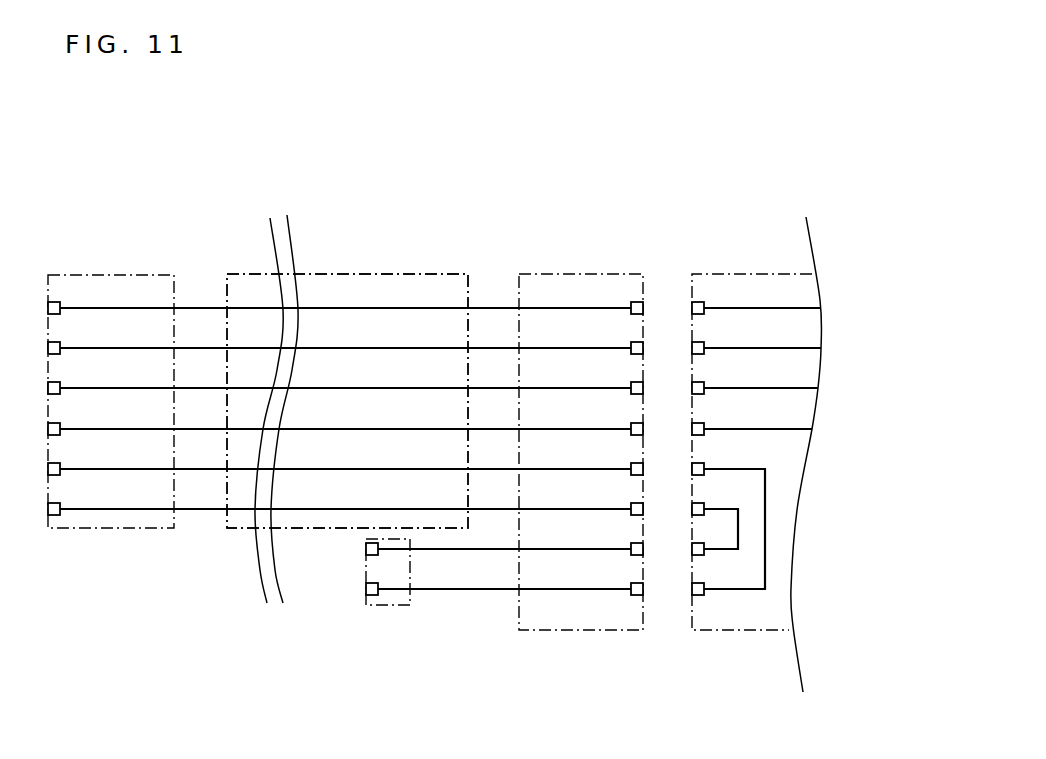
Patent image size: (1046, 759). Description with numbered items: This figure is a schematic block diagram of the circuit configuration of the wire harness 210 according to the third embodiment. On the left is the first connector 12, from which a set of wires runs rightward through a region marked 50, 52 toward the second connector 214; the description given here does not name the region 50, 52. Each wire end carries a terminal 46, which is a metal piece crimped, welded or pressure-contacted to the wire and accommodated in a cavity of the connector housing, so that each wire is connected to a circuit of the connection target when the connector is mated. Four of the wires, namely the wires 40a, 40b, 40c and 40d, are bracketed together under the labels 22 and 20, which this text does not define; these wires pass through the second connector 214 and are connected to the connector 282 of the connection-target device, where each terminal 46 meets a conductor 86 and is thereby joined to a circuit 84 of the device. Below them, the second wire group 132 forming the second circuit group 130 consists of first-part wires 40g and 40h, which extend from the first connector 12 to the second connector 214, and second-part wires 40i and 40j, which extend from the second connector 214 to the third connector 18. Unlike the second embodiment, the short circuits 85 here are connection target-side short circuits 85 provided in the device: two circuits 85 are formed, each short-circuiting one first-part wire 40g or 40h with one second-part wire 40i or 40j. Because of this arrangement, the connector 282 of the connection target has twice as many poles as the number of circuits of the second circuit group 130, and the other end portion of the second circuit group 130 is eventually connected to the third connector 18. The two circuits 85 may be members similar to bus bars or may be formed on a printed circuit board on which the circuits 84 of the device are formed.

The wire harness 210 is at (230, 163).
The first connector 12 is at (87, 530).
The connecting portion 50 is at (231, 530).
The flexible portion 52 is at (347, 401).
The third connector 18 is at (372, 607).
The second connector 214 is at (606, 632).
The connector of the connection target 282 is at (736, 632).
The first wire group 22 is at (345, 302).
The wire harness 20 is at (345, 321).
The wire 40a is at (320, 307).
The wire 40b is at (333, 348).
The wire 40c is at (358, 388).
The wire 40d is at (389, 429).
The second wire group 132 is at (345, 605).
The second circuit group 130 is at (345, 583).
The first-part wire 40g is at (440, 469).
The first-part wire 40h is at (453, 509).
The second-part wire 40j is at (486, 549).
The second-part wire 40i is at (365, 693).
The terminal 46 is at (54, 343).
The conductor 86 is at (705, 344).
The circuit 84 is at (760, 348).
The connection target-side short circuit 85 is at (739, 537).